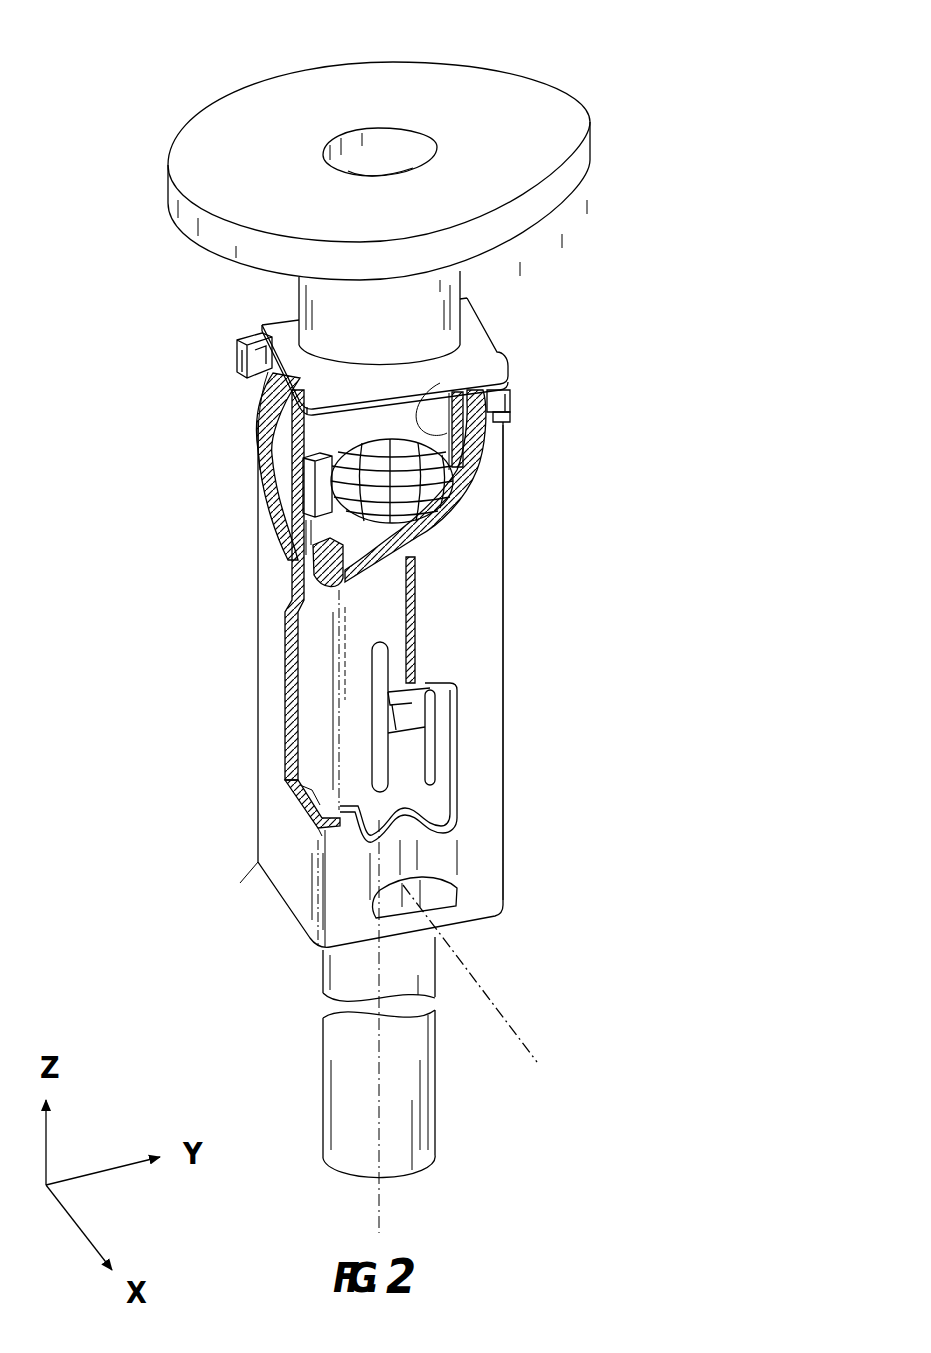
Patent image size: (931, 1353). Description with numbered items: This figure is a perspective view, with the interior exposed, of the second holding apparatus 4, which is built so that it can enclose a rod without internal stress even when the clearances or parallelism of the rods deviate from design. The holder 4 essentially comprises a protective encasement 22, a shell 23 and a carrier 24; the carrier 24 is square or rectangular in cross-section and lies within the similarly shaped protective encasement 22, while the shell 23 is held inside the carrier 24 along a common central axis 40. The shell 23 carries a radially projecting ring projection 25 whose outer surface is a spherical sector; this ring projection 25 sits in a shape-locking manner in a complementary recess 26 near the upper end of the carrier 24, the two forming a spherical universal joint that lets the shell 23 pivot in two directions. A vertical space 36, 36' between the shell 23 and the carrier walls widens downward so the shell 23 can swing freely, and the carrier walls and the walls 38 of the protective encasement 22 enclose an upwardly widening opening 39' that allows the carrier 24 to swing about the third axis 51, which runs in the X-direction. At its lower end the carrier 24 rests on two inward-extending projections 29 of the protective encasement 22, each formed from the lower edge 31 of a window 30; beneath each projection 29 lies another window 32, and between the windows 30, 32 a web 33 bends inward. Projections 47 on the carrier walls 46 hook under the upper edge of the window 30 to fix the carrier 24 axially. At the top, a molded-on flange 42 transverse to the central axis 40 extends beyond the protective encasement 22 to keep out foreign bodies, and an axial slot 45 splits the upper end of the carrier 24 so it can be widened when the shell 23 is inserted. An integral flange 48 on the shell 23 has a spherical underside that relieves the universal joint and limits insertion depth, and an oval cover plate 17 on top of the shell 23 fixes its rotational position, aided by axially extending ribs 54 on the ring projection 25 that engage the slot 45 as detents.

The second holding apparatus 4 is at (213, 575).
The oval cover plate 17 is at (467, 95).
The protective encasement 22 is at (458, 567).
The shell 23 is at (380, 432).
The carrier 24 is at (380, 615).
The ring projection 25 is at (320, 425).
The recess 26 is at (455, 360).
The projections 29 is at (420, 866).
The window 30 is at (437, 797).
The lower edge of window 31 is at (313, 828).
The window 32 is at (455, 905).
The web 33 is at (407, 853).
The vertical space 36 is at (255, 485).
The vertical space 36' is at (192, 409).
The walls of protective encasement 38 is at (490, 738).
The opening 39' is at (250, 809).
The central axis 40 is at (380, 1112).
The flange 42 is at (503, 387).
The slot 45 is at (307, 553).
The walls facing X-direction 46 is at (350, 748).
The projection 47 is at (413, 710).
The flange 48 is at (465, 342).
The third axis 51 is at (510, 1025).
The ribs 54 is at (320, 480).